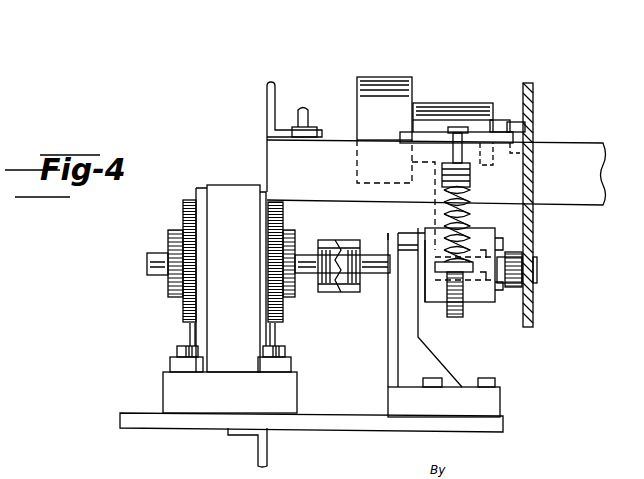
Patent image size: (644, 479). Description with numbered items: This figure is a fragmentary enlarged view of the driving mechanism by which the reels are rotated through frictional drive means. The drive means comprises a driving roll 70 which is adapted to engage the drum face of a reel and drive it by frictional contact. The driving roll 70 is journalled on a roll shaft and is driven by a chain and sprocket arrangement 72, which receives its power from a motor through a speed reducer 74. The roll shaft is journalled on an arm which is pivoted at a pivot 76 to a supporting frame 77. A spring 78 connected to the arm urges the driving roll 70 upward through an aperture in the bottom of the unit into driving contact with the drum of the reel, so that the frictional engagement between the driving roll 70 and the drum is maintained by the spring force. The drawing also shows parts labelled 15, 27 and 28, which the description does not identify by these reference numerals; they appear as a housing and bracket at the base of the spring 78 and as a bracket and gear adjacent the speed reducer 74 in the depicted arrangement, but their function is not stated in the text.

The housing / support bracket 15 is at (437, 250).
The bracket 27 is at (262, 122).
The gear 28 is at (183, 196).
The driving roll 70 is at (357, 117).
The chain and sprocket arrangement 72 is at (539, 118).
The speed reducer 74 is at (223, 196).
The pivot 76 is at (307, 280).
The supporting frame 77 is at (325, 191).
The spring 78 is at (443, 210).